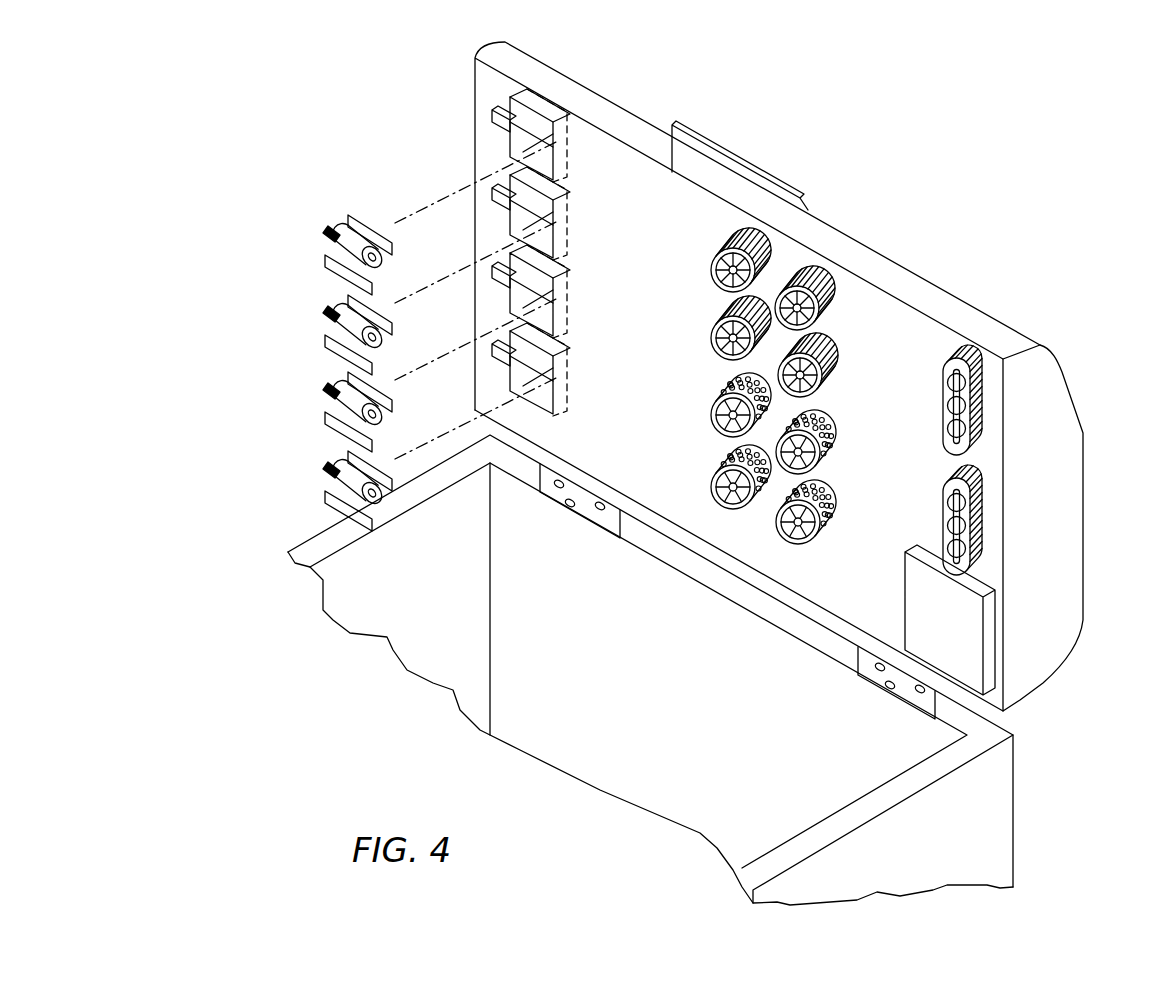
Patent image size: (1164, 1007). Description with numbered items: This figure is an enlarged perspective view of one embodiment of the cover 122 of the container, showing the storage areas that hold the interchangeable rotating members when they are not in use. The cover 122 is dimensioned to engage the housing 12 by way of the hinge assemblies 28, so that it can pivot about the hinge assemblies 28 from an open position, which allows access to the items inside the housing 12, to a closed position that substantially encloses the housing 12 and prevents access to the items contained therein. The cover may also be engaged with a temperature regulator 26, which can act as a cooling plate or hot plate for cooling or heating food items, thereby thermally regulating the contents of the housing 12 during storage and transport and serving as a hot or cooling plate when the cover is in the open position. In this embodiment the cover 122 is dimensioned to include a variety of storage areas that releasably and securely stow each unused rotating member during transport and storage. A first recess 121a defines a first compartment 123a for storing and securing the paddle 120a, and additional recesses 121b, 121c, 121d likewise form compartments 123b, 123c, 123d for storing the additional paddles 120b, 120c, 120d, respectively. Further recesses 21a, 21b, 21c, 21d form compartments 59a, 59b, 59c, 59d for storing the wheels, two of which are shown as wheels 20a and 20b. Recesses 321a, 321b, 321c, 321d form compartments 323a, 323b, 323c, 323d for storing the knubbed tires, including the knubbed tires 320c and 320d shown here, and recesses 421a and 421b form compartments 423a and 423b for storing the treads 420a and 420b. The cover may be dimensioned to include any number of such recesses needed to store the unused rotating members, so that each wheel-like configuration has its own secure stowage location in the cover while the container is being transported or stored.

The housing 12 is at (1015, 823).
The hinge assemblies 28 is at (598, 498).
The panel 122 is at (937, 284).
The temperature regulator 26 is at (962, 638).
The wheel 20a is at (725, 198).
The wheel 20b is at (841, 239).
The recess 21a is at (756, 198).
The recess 21b is at (826, 239).
The recess 21c is at (842, 365).
The recess 21d is at (709, 317).
The compartment 59a is at (748, 243).
The compartment 59b is at (811, 282).
The compartment 59c is at (834, 388).
The compartment 59d is at (722, 300).
The paddle 120a is at (326, 233).
The paddle 120b is at (326, 320).
The paddle 120c is at (326, 398).
The paddle 120d is at (328, 473).
The first recess 121a is at (565, 148).
The recess 121b is at (565, 226).
The recess 121c is at (565, 304).
The recess 121d is at (565, 382).
The first compartment 123a is at (505, 132).
The compartment 123b is at (503, 210).
The compartment 123c is at (505, 290).
The compartment 123d is at (505, 368).
The knubbed tire 320c is at (850, 542).
The knubbed tire 320d is at (699, 547).
The recess 321a is at (705, 402).
The recess 321b is at (853, 440).
The recess 321c is at (850, 510).
The recess 321d is at (705, 547).
The compartment 323a is at (712, 392).
The compartment 323b is at (836, 477).
The compartment 323c is at (836, 543).
The compartment 323d is at (762, 522).
The tread 420a is at (1043, 416).
The tread 420b is at (959, 521).
The recess 421a is at (1043, 416).
The recess 421b is at (1008, 521).
The compartment 423a is at (988, 462).
The compartment 423b is at (988, 578).